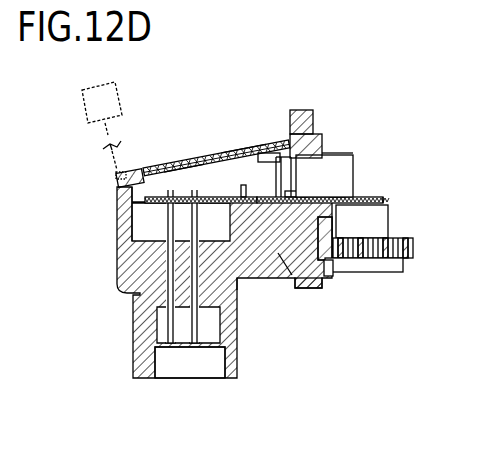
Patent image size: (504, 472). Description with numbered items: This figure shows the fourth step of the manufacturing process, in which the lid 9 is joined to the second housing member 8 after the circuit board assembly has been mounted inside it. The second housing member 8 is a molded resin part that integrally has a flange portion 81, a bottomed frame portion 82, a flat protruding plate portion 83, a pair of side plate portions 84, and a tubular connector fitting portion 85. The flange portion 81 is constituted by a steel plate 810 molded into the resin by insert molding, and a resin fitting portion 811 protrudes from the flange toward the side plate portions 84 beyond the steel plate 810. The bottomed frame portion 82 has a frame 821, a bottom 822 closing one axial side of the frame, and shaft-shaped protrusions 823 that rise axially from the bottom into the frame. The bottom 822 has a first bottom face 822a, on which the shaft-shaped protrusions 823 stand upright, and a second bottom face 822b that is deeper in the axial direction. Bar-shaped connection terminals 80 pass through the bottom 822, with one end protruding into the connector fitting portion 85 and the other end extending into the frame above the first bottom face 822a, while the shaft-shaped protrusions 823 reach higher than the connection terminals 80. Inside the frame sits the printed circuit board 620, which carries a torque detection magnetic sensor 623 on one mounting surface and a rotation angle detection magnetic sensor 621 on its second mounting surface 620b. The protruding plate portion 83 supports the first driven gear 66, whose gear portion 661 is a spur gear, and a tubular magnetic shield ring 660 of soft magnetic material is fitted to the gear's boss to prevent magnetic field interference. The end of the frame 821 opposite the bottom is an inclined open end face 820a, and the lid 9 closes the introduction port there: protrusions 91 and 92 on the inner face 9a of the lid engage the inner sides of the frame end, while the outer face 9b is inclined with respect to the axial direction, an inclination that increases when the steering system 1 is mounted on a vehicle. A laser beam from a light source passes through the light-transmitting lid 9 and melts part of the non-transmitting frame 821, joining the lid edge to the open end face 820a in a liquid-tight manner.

The steering system 1 is at (118, 90).
The second housing member 8 is at (364, 143).
The lid 9 is at (209, 154).
The inner face 9a is at (239, 150).
The outer face 9b is at (189, 160).
The protrusion 91 is at (143, 168).
The protrusion 92 is at (251, 146).
The connection terminal 80 is at (193, 332).
The flange portion 81 is at (291, 107).
The steel plate 810 is at (299, 113).
The fitting portion 811 is at (318, 130).
The bottomed frame portion 82 is at (181, 282).
The open end face 820a is at (116, 176).
The frame 821 is at (125, 230).
The bottom 822 is at (137, 272).
The first bottom face 822a is at (208, 238).
The second bottom face 822b is at (238, 279).
The shaft-shaped protrusion 823 is at (241, 190).
The protruding plate portion 83 is at (365, 272).
The side plate portion 84 is at (334, 154).
The connector fitting portion 85 is at (148, 350).
The printed circuit board 620 is at (372, 197).
The second mounting surface 620b is at (330, 276).
The rotation angle detection magnetic sensor 621 is at (386, 200).
The torque detection magnetic sensor 623 is at (338, 191).
The first driven gear 66 is at (418, 256).
The magnetic shield ring 660 is at (388, 226).
The gear portion 661 is at (402, 259).